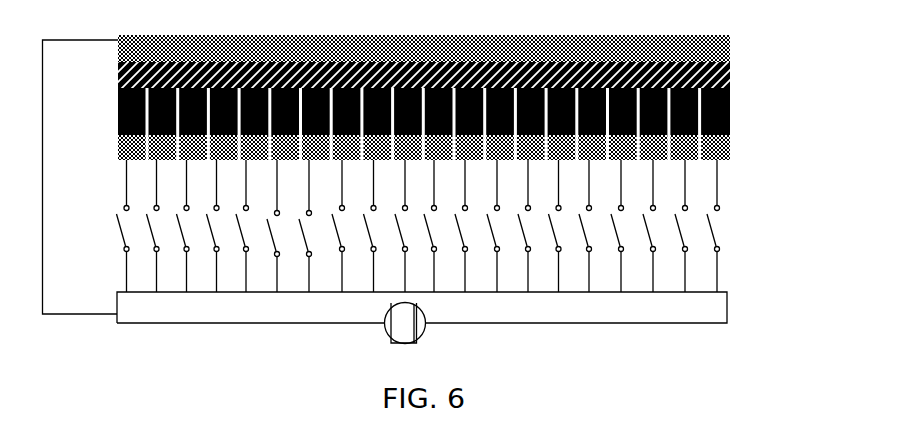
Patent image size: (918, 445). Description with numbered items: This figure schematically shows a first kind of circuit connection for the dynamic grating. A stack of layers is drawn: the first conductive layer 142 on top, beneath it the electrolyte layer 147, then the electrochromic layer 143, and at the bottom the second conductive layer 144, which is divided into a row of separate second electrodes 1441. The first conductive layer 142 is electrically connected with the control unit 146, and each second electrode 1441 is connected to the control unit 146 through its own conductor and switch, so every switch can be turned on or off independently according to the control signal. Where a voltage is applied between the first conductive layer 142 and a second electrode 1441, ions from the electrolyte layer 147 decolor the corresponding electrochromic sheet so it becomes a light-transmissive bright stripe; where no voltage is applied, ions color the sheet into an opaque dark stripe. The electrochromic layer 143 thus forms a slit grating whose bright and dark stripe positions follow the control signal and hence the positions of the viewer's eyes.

The first conductive layer 142 is at (732, 57).
The electrolyte layer 147 is at (732, 78).
The electrochromic layer 143 is at (732, 119).
The second conductive layer 144 is at (732, 152).
The second electrode 1441 is at (116, 157).
The control unit 146 is at (353, 305).